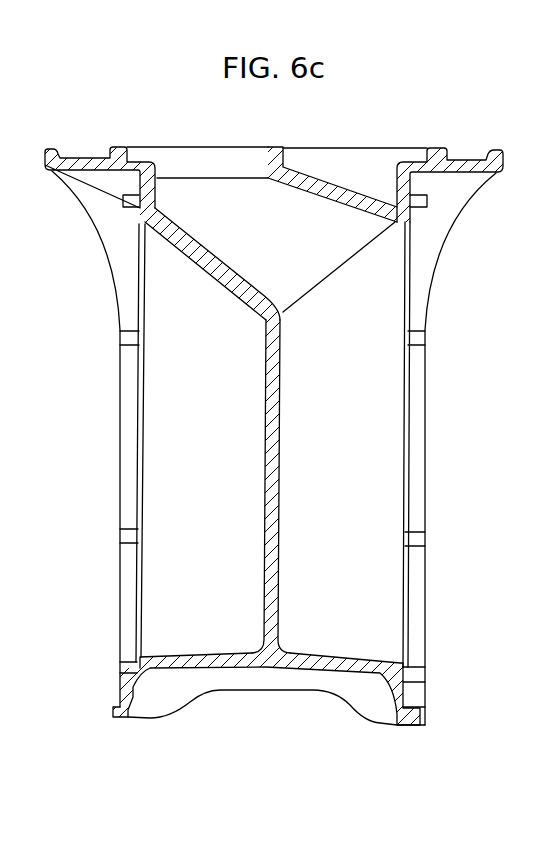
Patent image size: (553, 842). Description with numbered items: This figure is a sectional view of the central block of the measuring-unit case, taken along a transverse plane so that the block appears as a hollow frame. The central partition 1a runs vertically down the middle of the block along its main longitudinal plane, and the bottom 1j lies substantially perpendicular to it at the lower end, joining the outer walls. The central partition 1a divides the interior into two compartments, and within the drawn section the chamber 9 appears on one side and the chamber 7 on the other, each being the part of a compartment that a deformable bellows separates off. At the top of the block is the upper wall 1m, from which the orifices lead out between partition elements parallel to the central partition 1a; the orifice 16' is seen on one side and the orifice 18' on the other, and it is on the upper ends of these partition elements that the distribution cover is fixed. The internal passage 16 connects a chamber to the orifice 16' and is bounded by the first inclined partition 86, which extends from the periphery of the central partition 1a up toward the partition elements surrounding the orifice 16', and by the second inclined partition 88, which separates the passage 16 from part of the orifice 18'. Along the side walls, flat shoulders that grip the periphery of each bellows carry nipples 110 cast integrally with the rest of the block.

The upper wall 1m is at (82, 158).
The orifice 16' is at (197, 140).
The second inclined partition 88 is at (300, 180).
The orifice 18' is at (355, 132).
The internal passage 16 is at (330, 267).
The first inclined partition 86 is at (208, 266).
The nipples 110 is at (128, 338).
The chamber 9 is at (213, 448).
The chamber 7 is at (355, 451).
The central partition 1a is at (280, 517).
The bottom 1j is at (242, 662).